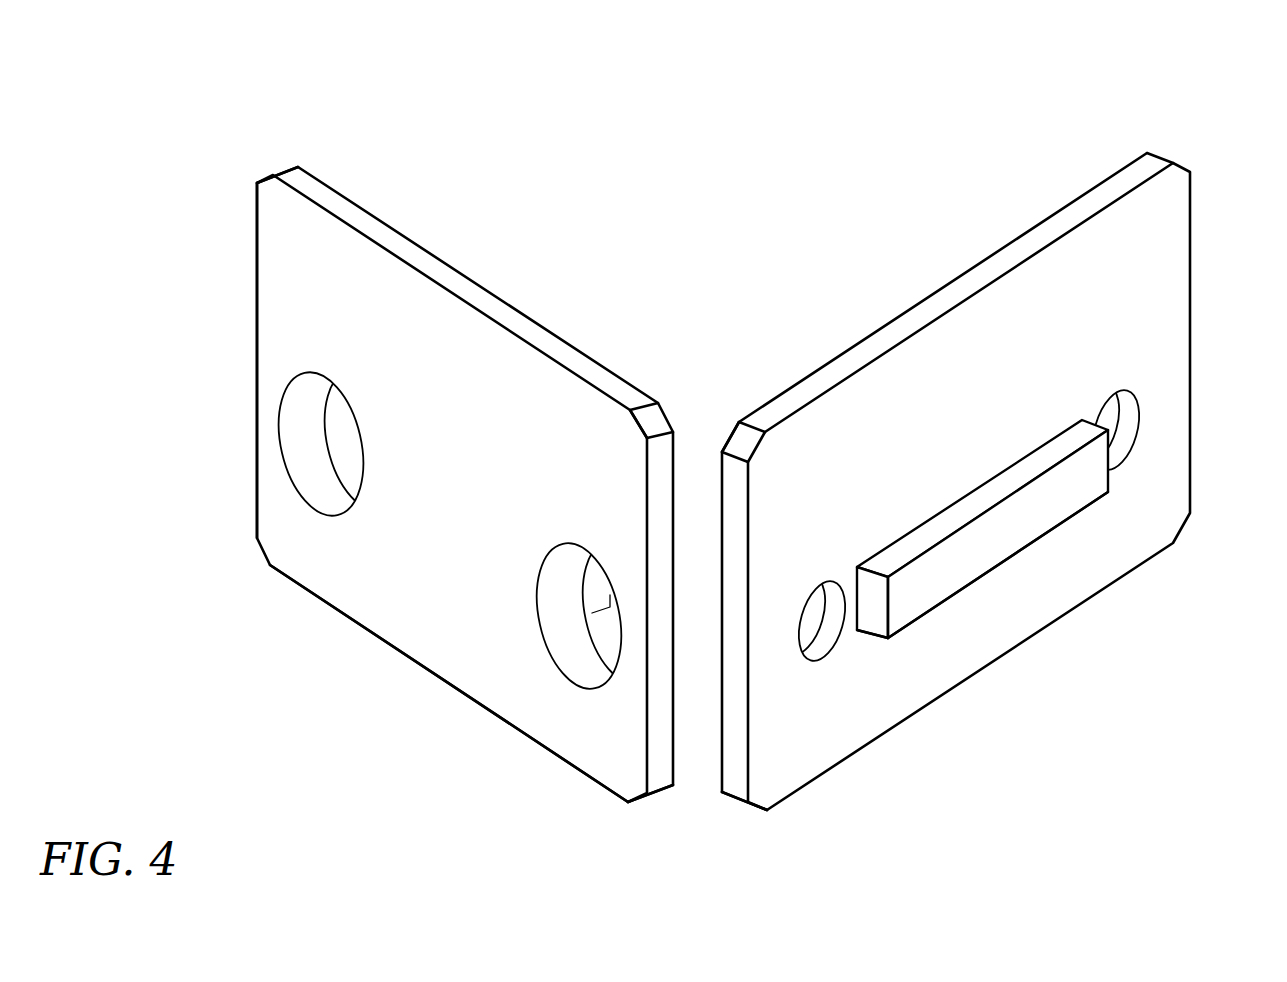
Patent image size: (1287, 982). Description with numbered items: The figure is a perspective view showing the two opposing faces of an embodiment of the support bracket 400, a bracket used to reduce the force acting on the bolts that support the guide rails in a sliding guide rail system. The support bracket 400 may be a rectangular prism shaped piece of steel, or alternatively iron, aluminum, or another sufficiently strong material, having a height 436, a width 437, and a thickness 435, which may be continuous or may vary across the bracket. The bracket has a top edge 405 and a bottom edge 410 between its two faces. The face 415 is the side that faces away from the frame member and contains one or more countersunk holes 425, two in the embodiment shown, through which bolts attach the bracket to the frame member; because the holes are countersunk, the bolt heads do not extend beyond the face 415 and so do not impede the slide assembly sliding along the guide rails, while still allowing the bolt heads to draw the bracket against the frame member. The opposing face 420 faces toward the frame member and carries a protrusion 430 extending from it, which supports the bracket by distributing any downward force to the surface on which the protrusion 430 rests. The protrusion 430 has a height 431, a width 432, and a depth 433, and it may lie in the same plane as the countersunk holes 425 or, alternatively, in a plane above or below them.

The support bracket 400 is at (957, 103).
The top edge 405 is at (817, 370).
The bottom edge 410 is at (617, 798).
The face 415 is at (367, 273).
The face 420 is at (1047, 393).
The countersunk hole 425 is at (573, 568).
The protrusion 430 is at (1013, 460).
The height 431 is at (892, 646).
The width 432 is at (899, 636).
The depth 433 is at (1117, 500).
The thickness 435 is at (300, 150).
The height 436 is at (233, 178).
The width 437 is at (256, 590).